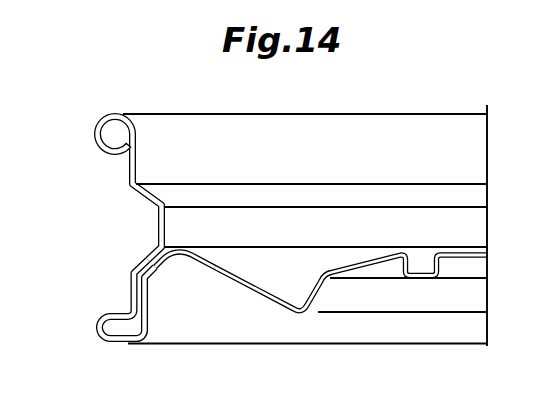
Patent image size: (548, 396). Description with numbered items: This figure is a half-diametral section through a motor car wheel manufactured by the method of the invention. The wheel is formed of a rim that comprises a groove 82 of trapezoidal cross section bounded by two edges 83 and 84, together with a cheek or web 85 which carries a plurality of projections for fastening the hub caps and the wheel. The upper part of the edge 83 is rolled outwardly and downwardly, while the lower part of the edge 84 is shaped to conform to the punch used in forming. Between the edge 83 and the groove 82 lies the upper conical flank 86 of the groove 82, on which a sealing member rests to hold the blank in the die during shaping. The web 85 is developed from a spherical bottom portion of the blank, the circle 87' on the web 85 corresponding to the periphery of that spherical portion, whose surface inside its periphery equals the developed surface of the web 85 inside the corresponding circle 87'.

The groove 82 is at (158, 221).
The edge 83 is at (136, 143).
The edge 84 is at (131, 295).
The cheek or web 85 is at (378, 262).
The upper conical flank 86 is at (137, 193).
The periphery of spherical portion 87' is at (185, 313).